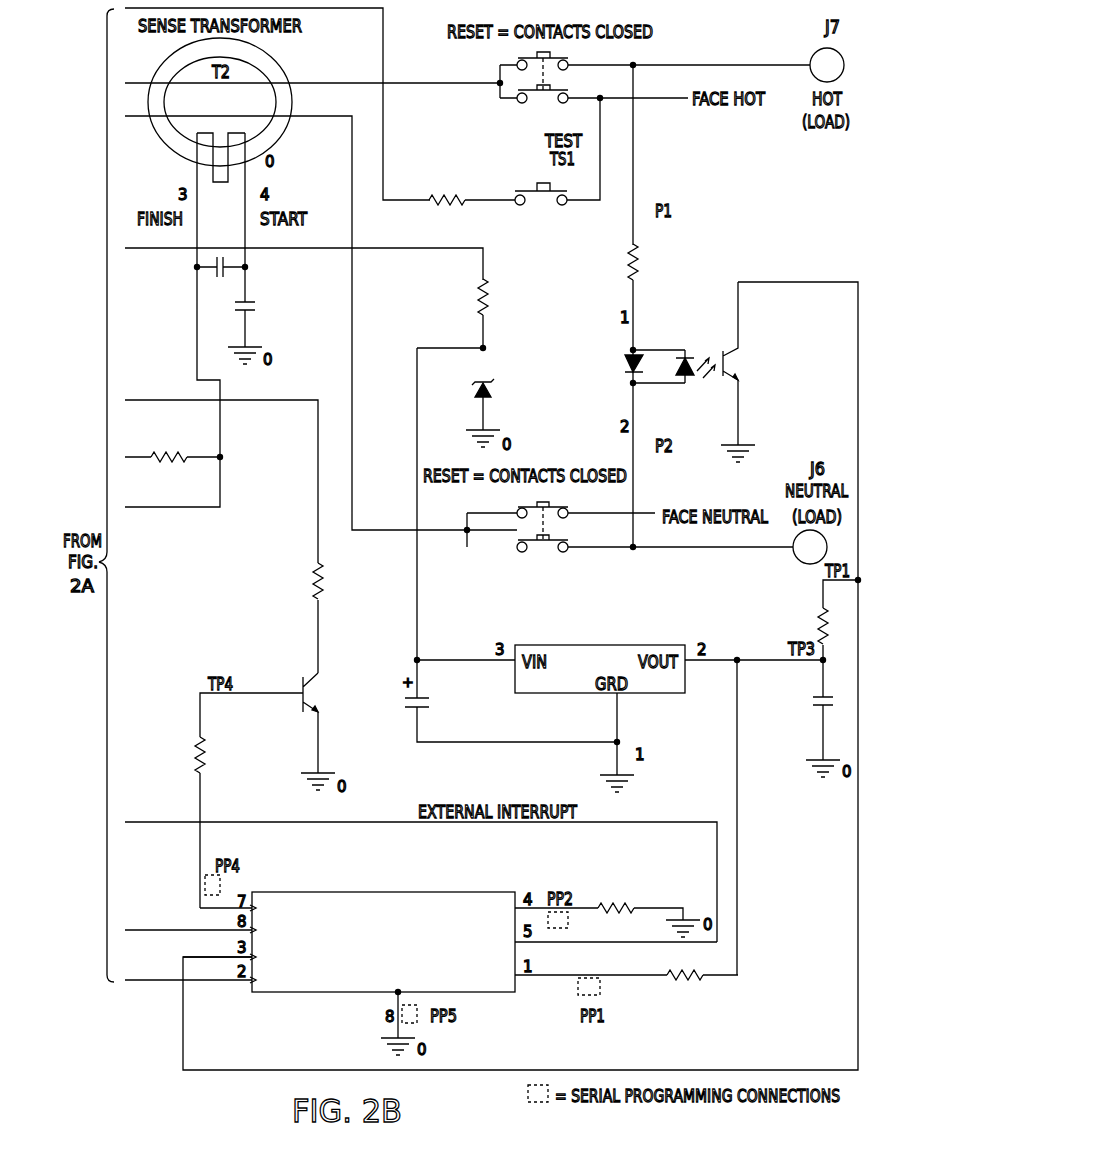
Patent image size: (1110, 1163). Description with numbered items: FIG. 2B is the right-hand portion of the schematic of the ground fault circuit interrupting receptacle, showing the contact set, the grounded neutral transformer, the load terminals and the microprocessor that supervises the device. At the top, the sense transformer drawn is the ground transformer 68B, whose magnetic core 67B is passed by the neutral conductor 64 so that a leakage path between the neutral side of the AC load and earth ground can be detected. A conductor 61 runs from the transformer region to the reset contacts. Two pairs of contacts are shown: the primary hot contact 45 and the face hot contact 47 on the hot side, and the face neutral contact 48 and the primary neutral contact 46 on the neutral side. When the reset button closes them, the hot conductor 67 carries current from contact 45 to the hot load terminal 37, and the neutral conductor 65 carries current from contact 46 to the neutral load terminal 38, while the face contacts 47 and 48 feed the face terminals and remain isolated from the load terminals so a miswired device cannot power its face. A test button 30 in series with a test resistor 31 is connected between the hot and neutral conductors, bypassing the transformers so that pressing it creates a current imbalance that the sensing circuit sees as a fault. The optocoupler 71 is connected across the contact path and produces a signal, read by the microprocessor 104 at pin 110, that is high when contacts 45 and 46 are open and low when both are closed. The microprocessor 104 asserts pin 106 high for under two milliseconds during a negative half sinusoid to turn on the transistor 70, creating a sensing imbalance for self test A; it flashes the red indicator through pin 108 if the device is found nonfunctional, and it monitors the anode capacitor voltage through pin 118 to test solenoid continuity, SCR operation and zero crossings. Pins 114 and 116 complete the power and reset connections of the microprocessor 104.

The hot conductor to reset contacts 61 is at (385, 48).
The ground transformer 68B is at (220, 135).
The magnetic core 67B is at (283, 108).
The primary hot contact 45 is at (514, 59).
The face hot contact 47 is at (528, 103).
The test button 30 is at (520, 188).
The test resistor 31 is at (438, 201).
The hot conductor 67 is at (707, 63).
The load terminal 37 is at (813, 56).
The neutral conductor 64 is at (353, 308).
The optocoupler 71 is at (728, 350).
The face neutral contact 48 is at (568, 507).
The primary neutral contact 46 is at (551, 548).
The neutral conductor 65 is at (685, 549).
The load terminal 38 is at (794, 554).
The transistor 70 is at (322, 692).
The microprocessor 104 is at (473, 993).
The pin 106 is at (215, 905).
The pin 110 is at (182, 958).
The pin 108 is at (212, 982).
The GP3 reset connection 116 is at (522, 893).
The pin 118 is at (625, 941).
The VDD supply connection 114 is at (545, 978).